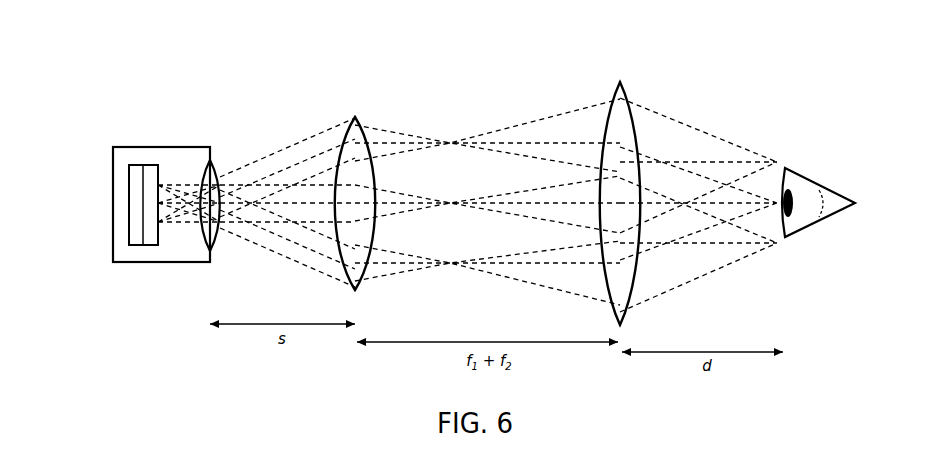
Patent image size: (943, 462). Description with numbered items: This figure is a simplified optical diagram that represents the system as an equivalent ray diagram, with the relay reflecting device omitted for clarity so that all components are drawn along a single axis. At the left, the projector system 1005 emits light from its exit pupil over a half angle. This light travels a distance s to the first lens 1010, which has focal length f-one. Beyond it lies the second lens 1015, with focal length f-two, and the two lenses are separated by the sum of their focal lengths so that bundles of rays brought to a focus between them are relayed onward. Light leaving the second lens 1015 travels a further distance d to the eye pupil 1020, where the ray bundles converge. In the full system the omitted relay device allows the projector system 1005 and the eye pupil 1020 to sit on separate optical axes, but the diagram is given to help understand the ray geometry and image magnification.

The projector system 1005 is at (112, 140).
The first lens 1010 is at (355, 110).
The second lens 1015 is at (620, 76).
The eye pupil 1020 is at (778, 187).